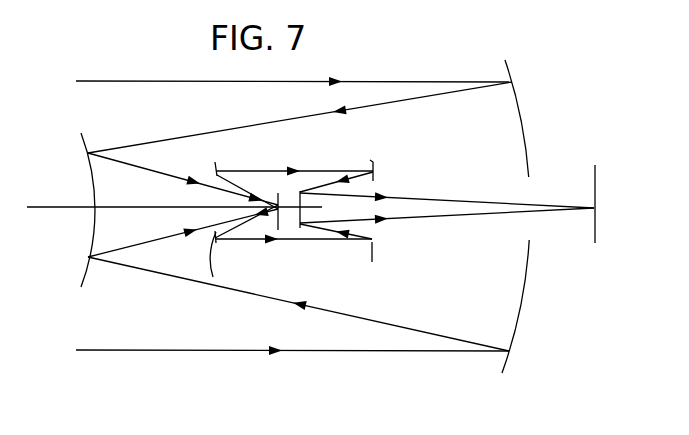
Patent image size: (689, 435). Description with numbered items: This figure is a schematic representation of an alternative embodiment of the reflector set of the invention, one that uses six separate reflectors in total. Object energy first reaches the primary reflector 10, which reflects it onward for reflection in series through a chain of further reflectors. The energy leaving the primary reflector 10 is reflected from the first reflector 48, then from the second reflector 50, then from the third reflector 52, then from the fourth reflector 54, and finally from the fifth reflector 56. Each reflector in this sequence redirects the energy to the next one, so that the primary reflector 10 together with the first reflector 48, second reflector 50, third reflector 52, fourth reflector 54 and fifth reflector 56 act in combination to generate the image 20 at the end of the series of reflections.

The primary reflector 10 is at (507, 63).
The image 20 is at (595, 238).
The first reflector 48 is at (81, 135).
The second reflector 50 is at (278, 192).
The third reflector 52 is at (218, 163).
The fourth reflector 54 is at (372, 262).
The fifth reflector 56 is at (299, 229).